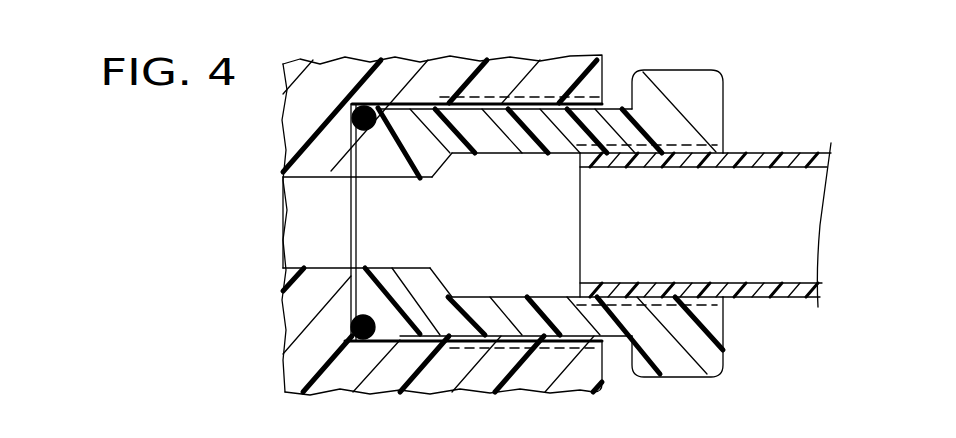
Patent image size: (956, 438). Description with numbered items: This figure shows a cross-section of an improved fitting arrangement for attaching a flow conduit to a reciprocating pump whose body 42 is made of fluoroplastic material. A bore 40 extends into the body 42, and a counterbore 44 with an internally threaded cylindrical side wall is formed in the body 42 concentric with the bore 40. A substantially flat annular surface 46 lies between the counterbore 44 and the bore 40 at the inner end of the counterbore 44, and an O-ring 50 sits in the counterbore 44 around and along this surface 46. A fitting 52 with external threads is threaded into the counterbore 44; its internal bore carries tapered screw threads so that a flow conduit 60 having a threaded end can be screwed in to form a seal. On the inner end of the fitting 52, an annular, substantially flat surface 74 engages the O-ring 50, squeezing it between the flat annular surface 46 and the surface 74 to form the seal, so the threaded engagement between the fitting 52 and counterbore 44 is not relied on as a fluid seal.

The bore 40 is at (312, 180).
The body 42 is at (346, 78).
The counterbore 44 is at (427, 100).
The flat annular surface 46 is at (300, 176).
The O-ring 50 is at (350, 113).
The fitting 52 is at (617, 130).
The flow conduit 60 is at (742, 282).
The annular flat surface 74 is at (389, 111).